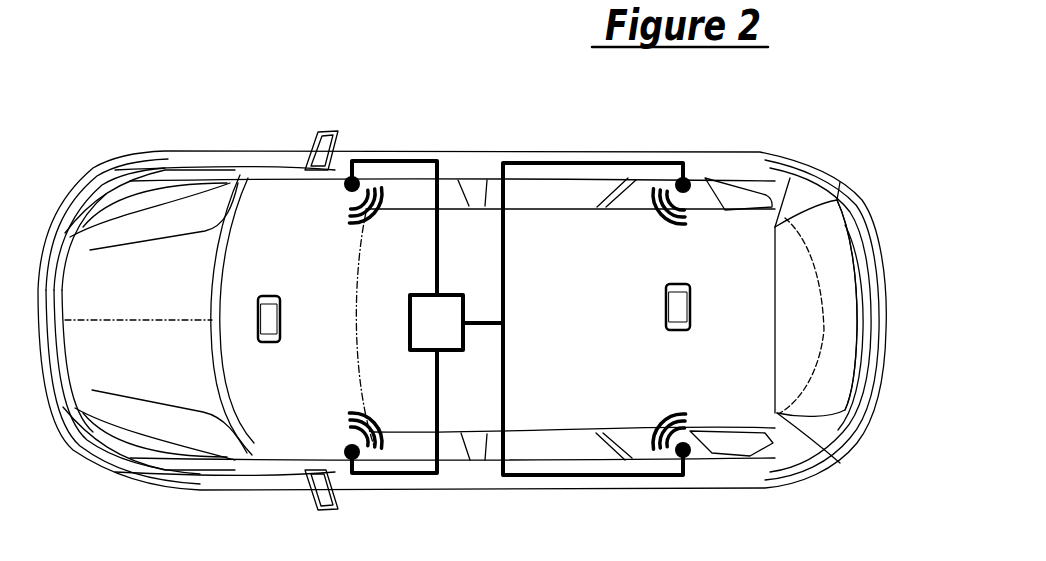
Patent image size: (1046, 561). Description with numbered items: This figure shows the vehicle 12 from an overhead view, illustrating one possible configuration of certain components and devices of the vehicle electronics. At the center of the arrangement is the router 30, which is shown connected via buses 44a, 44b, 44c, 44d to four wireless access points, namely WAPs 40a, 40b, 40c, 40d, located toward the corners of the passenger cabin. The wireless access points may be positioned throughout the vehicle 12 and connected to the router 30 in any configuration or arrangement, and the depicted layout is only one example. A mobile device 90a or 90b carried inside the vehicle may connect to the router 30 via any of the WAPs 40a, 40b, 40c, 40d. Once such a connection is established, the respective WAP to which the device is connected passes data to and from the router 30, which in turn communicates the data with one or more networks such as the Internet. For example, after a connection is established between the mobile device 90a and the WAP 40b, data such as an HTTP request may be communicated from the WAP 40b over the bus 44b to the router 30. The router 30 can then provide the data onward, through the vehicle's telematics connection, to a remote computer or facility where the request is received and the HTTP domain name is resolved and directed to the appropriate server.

The vehicle 12 is at (134, 150).
The router 30 is at (456, 322).
The wireless access point (WAP) 40a is at (344, 190).
The wireless access point (WAP) 40b is at (345, 447).
The wireless access point (WAP) 40c is at (688, 178).
The wireless access point (WAP) 40d is at (691, 456).
The bus 44a is at (416, 159).
The bus 44b is at (383, 480).
The bus 44c is at (503, 160).
The bus 44d is at (501, 478).
The mobile device 90a is at (283, 312).
The mobile device 90b is at (690, 298).